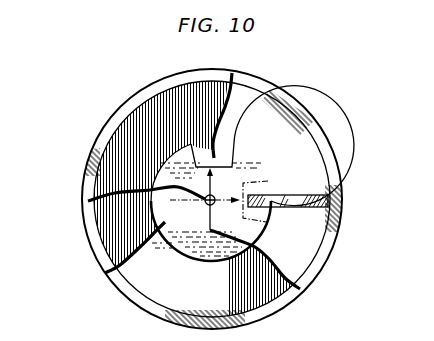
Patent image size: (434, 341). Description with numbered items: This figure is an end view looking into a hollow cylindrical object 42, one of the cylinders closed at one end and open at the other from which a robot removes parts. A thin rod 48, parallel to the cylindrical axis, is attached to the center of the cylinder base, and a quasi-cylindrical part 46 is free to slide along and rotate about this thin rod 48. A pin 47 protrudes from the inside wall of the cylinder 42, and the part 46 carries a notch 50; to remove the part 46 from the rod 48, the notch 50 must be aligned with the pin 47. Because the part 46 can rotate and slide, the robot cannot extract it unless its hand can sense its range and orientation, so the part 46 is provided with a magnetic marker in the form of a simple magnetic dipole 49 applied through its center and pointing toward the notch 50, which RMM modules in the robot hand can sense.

The hollow cylindrical object 42 is at (306, 124).
The quasi-cylindrical part 46 is at (105, 273).
The pin 47 is at (300, 195).
The thin rod 48 is at (88, 201).
The magnetic dipole 49 is at (300, 289).
The notch 50 is at (232, 73).